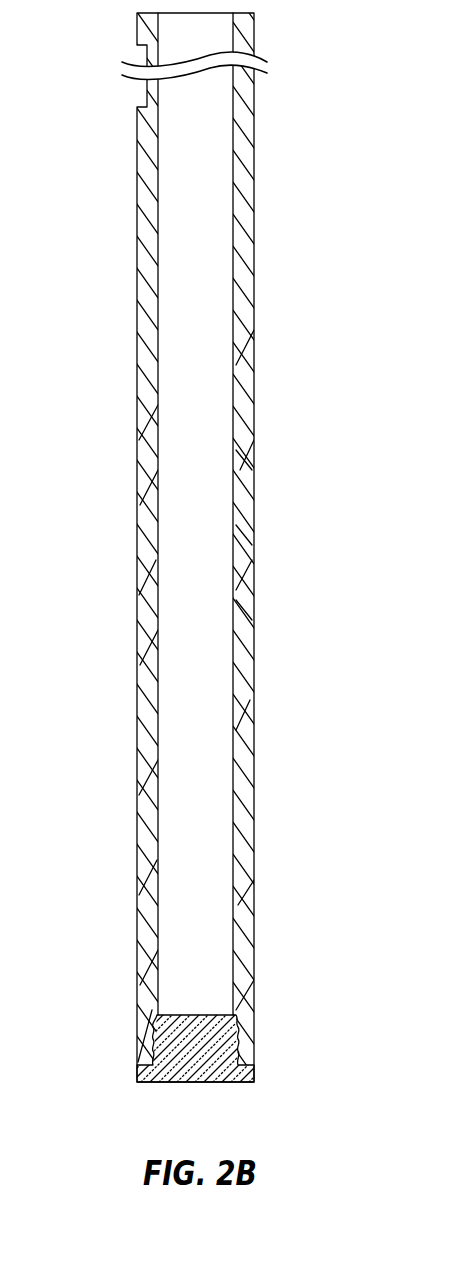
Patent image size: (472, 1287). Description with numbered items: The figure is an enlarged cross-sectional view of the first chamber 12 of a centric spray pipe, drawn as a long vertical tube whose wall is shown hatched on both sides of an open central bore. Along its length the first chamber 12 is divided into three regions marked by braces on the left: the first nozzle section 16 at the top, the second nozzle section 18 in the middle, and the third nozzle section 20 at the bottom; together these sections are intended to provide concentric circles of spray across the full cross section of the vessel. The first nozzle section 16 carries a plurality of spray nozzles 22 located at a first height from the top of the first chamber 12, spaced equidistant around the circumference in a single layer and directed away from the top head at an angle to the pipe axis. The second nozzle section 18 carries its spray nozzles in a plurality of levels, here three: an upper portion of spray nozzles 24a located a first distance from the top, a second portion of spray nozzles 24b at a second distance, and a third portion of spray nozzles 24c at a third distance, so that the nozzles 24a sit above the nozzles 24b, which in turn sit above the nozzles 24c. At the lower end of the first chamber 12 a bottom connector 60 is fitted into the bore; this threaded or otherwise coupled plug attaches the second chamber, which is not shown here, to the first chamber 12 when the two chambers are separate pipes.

The first chamber 12 is at (300, 123).
The first nozzle section 16 is at (120, 201).
The second nozzle section 18 is at (120, 310).
The third nozzle section 20 is at (120, 707).
The spray nozzles 22 is at (245, 248).
The spray nozzles 24a is at (245, 465).
The spray nozzles 24b is at (245, 540).
The spray nozzles 24c is at (245, 614).
The bottom connector 60 is at (218, 1083).